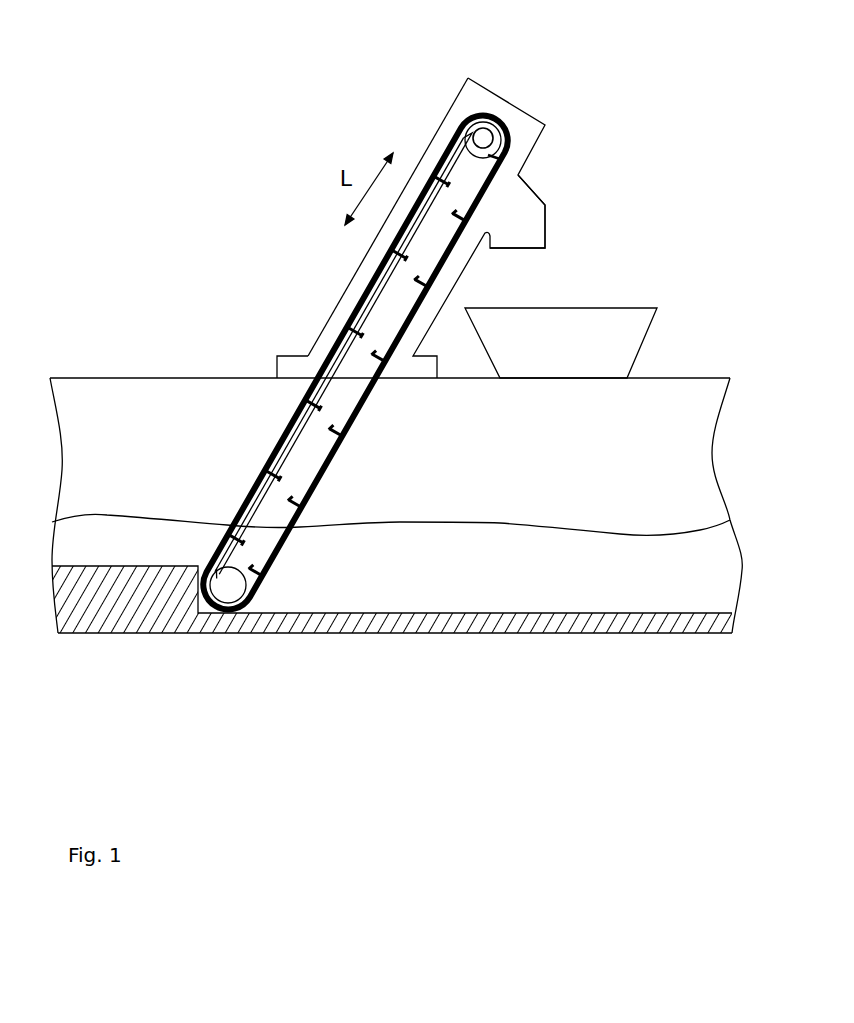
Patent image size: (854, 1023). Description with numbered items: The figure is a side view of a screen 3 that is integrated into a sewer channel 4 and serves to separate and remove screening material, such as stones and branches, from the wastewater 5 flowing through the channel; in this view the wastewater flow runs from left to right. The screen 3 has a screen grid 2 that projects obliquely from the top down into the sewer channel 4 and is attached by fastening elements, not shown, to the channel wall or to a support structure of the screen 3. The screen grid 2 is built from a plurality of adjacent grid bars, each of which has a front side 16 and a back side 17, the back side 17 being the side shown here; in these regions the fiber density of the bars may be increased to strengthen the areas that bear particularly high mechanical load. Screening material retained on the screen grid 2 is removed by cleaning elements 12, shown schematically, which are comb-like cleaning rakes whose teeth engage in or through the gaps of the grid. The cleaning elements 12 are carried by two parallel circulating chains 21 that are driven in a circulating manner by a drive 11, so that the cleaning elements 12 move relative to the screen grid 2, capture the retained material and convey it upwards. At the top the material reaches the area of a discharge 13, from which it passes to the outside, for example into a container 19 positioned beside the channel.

The screen grid 2 is at (462, 135).
The screen 3 is at (632, 110).
The sewer channel 4 is at (162, 380).
The wastewater 5 is at (463, 542).
The drive 11 is at (493, 135).
The cleaning elements 12 is at (330, 433).
The discharge 13 is at (538, 232).
The front side 16 is at (312, 275).
The back side 17 is at (338, 390).
The container 19 is at (615, 320).
The circulating chains 21 is at (318, 488).